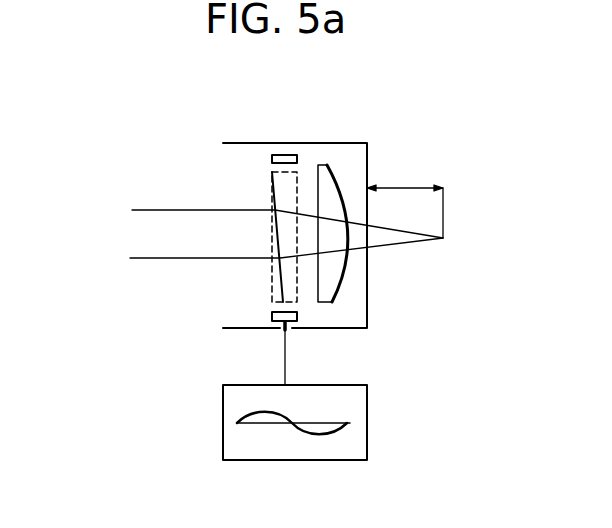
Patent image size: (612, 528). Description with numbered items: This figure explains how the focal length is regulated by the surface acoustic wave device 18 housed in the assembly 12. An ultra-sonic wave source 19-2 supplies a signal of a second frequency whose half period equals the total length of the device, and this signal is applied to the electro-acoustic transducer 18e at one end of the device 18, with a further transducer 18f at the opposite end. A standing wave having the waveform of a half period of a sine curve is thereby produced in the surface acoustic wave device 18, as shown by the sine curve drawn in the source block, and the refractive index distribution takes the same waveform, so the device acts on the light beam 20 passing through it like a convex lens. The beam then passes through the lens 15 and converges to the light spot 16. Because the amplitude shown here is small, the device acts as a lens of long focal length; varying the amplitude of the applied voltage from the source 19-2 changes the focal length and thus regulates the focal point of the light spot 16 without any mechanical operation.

The light deflecting device housing 12 is at (233, 171).
The surface acoustic wave device 18 is at (273, 203).
The upper piezoelectric drive element 18f is at (283, 155).
The electro-acoustic transducer 18e is at (297, 316).
The objective lens 15 is at (332, 273).
The light beam 20 is at (145, 243).
The light spot 16 is at (443, 238).
The ultra-sonic wave source 19-2 is at (223, 422).